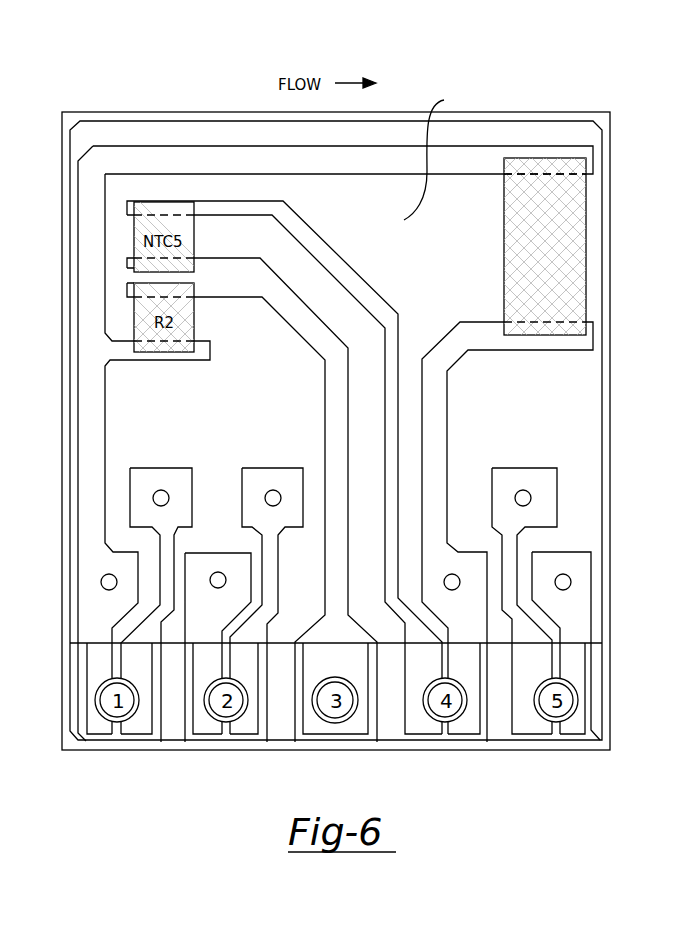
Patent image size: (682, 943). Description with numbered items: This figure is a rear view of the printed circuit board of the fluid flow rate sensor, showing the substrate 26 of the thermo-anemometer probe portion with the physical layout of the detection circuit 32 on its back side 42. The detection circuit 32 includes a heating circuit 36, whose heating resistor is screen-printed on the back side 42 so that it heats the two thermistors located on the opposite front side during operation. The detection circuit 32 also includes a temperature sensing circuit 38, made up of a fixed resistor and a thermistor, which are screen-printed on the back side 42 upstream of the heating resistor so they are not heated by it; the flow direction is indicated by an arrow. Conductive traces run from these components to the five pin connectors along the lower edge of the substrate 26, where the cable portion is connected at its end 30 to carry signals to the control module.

The substrate 26 is at (503, 60).
The end 30 is at (608, 706).
The detection circuit 32 is at (473, 441).
The heating circuit 36 is at (563, 155).
The temperature sensing circuit 38 is at (121, 193).
The back side 42 is at (440, 153).